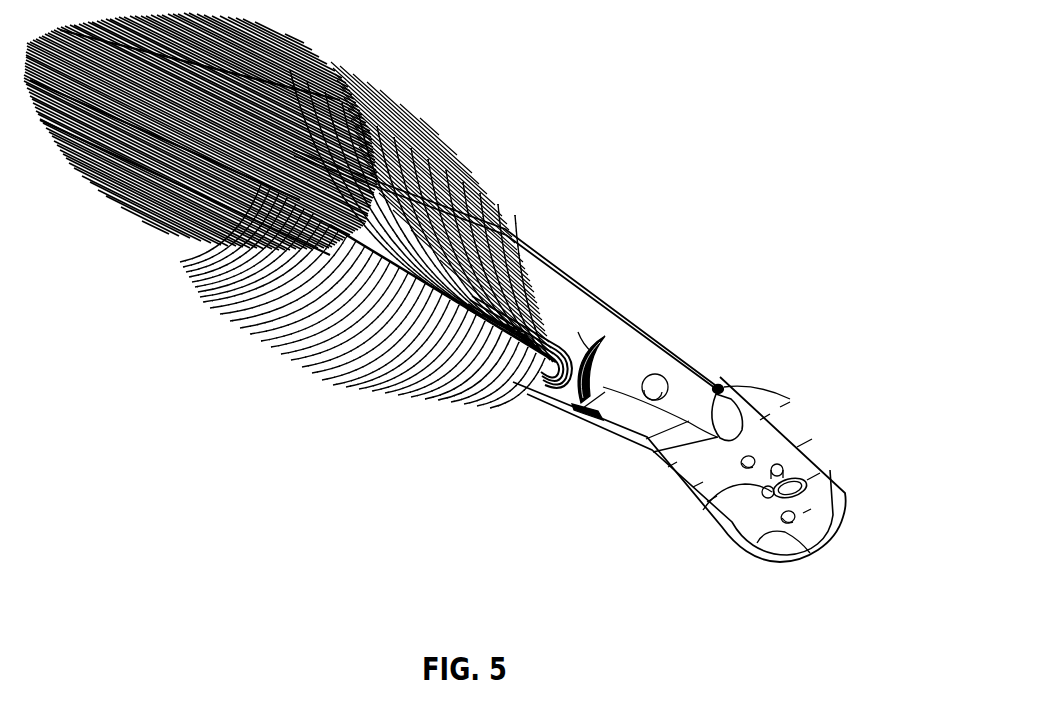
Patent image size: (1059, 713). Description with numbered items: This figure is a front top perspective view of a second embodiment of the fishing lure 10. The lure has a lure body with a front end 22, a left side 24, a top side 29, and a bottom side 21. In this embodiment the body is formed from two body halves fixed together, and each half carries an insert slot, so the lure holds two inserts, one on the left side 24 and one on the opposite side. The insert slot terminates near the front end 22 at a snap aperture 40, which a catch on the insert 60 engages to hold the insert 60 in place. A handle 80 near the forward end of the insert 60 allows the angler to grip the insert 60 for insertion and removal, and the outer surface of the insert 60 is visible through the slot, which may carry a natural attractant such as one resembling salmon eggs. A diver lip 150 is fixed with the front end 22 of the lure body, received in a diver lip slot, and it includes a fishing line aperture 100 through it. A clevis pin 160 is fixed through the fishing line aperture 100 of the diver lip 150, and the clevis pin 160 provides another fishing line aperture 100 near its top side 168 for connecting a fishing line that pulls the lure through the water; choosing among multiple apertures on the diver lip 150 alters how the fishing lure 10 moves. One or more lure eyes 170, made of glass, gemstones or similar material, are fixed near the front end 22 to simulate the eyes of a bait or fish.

The fishing lure 10 is at (692, 93).
The bottom side 21 is at (567, 397).
The front end 22 is at (641, 346).
The left side 24 is at (578, 332).
The top side 29 is at (521, 242).
The snap aperture 40 is at (597, 355).
The insert 60 is at (527, 315).
The handle 80 is at (558, 362).
The fishing line aperture 100 is at (706, 521).
The diver lip 150 is at (806, 552).
The clevis pin 160 is at (841, 511).
The top side 168 is at (784, 468).
The lure eyes 170 is at (652, 368).